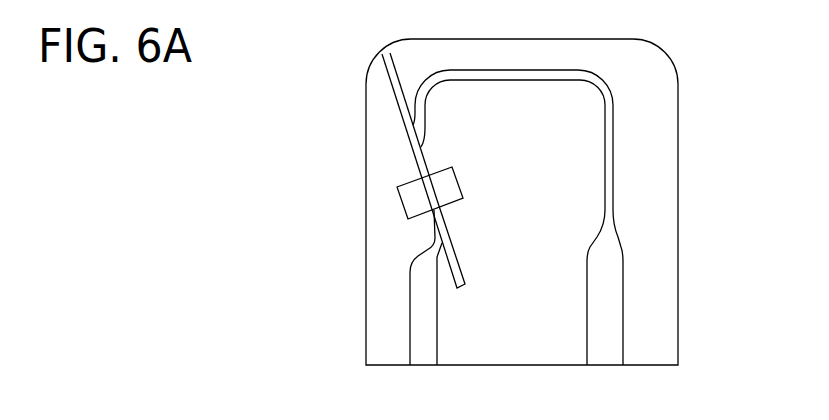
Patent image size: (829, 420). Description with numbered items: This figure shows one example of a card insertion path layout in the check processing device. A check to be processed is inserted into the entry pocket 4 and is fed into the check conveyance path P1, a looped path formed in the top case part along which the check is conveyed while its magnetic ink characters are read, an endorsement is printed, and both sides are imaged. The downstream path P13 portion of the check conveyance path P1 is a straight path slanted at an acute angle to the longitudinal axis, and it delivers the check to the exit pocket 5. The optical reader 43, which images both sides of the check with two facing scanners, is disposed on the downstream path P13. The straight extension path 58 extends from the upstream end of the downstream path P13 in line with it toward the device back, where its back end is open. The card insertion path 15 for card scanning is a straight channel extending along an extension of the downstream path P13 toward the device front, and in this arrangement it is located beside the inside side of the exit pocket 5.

The extension path 58 is at (391, 84).
The downstream path P13 is at (415, 157).
The optical reader 43 is at (403, 205).
The card insertion path 15 is at (455, 254).
The exit pocket 5 is at (410, 321).
The entry pocket 4 is at (620, 303).
The check conveyance path P1 is at (616, 129).